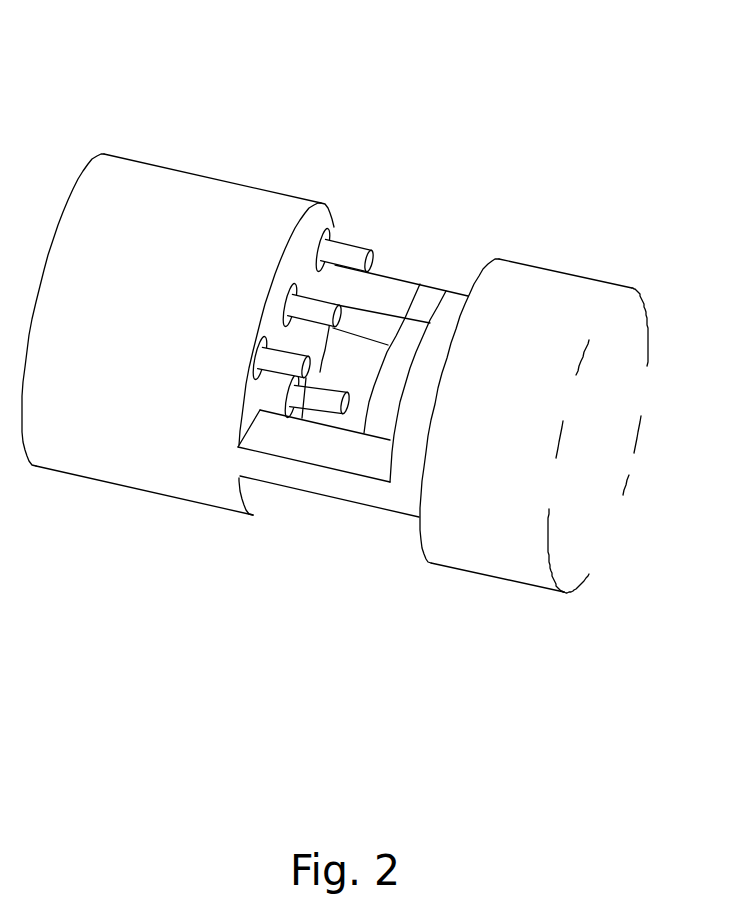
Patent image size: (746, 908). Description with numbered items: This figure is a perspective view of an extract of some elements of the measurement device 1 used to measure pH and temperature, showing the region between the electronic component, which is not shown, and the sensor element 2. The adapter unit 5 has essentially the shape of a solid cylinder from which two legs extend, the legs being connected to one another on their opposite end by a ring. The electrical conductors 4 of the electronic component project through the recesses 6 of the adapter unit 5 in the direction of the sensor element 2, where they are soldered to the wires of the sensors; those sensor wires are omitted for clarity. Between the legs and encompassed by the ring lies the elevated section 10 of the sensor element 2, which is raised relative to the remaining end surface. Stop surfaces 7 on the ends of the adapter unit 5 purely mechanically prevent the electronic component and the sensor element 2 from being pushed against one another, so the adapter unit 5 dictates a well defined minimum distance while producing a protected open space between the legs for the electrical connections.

The measurement device 1 is at (193, 588).
The sensor element 2 is at (581, 295).
The electrical conductors 4 is at (354, 252).
The adapter unit 5 is at (190, 194).
The recesses 6 is at (335, 233).
The stop surfaces 7 is at (417, 517).
The elevated section 10 is at (392, 355).